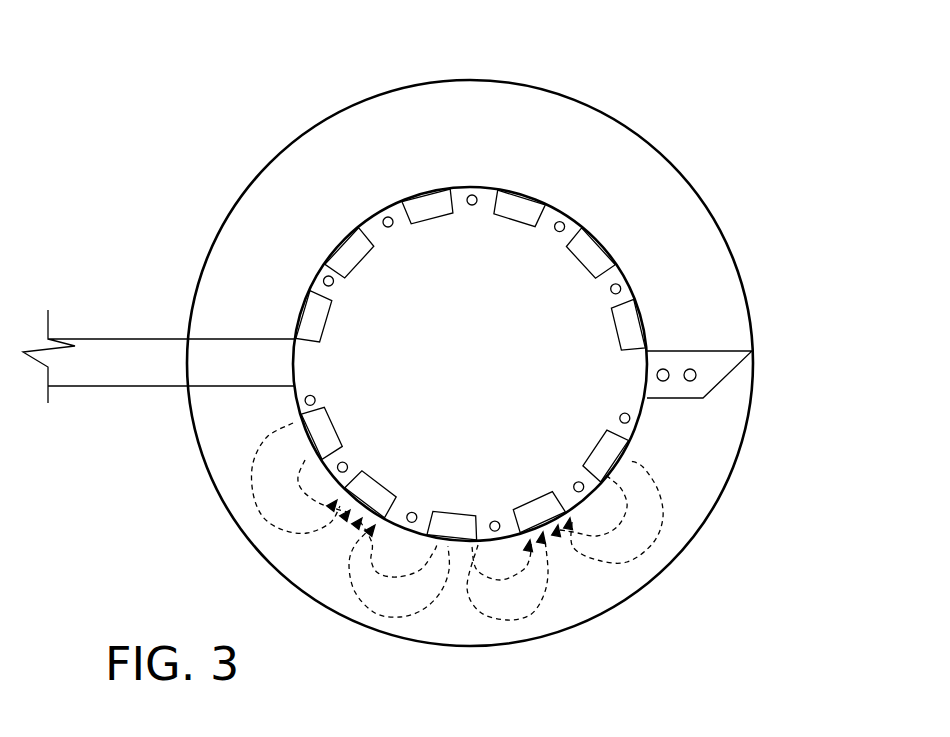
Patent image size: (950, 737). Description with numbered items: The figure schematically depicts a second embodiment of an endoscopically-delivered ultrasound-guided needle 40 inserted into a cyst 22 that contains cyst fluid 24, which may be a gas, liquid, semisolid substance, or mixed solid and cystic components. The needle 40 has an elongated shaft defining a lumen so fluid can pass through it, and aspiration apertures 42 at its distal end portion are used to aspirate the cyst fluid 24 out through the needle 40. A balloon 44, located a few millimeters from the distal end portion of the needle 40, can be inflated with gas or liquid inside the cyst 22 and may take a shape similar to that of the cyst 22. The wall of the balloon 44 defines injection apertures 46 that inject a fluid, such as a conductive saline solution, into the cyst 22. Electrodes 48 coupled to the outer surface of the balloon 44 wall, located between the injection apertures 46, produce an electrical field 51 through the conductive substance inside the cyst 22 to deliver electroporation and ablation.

The cyst 22 is at (541, 90).
The cyst fluid 24 is at (660, 228).
The endoscopically-delivered ultrasound-guided needle 40 is at (119, 339).
The aspiration apertures 42 is at (663, 360).
The balloon 44 is at (563, 213).
The injection apertures 46 is at (387, 220).
The electrodes 48 is at (513, 197).
The electrical field 51 is at (673, 473).